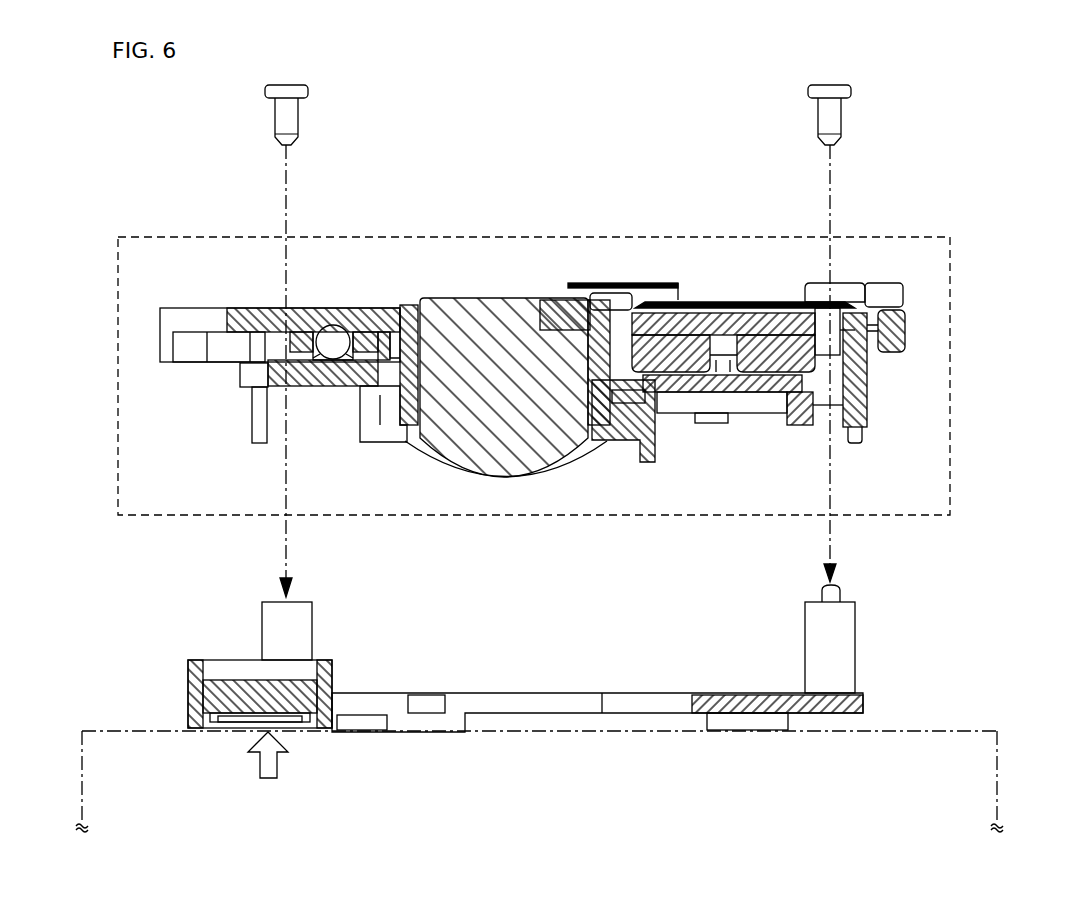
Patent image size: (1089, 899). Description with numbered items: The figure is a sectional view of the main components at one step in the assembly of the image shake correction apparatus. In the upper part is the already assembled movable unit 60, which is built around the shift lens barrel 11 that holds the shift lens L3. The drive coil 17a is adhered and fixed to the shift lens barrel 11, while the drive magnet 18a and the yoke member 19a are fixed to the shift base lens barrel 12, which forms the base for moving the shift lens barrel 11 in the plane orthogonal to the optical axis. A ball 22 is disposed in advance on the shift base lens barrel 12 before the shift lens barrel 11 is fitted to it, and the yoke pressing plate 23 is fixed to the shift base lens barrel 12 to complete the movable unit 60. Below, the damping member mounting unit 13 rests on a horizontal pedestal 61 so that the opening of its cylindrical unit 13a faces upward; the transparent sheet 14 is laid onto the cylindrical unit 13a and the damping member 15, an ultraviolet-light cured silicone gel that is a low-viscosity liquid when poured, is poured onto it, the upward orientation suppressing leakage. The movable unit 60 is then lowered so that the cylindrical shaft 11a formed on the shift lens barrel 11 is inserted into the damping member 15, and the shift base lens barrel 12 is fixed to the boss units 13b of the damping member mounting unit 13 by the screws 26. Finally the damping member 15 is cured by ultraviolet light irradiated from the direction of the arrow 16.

The screw 26 is at (292, 117).
The movable unit 60 is at (950, 340).
The shift base lens barrel 12 is at (256, 307).
The ball 22 is at (331, 338).
The shift lens barrel 11 is at (658, 440).
The cylindrical shaft 11a is at (257, 420).
The shift lens L3 is at (450, 452).
The yoke pressing plate 23 is at (588, 283).
The yoke member 19a is at (700, 323).
The drive magnet 18a is at (758, 325).
The drive coil 17a is at (768, 385).
The damping member mounting unit 13 is at (535, 716).
The cylindrical unit 13a is at (188, 693).
The boss unit 13b is at (305, 633).
The transparent sheet 14 is at (232, 722).
The damping member 15 is at (298, 718).
The arrow 16 is at (268, 773).
The horizontal pedestal 61 is at (997, 782).